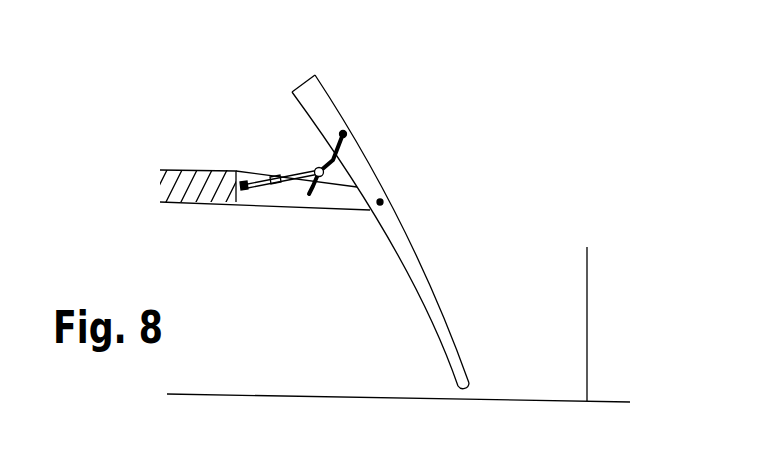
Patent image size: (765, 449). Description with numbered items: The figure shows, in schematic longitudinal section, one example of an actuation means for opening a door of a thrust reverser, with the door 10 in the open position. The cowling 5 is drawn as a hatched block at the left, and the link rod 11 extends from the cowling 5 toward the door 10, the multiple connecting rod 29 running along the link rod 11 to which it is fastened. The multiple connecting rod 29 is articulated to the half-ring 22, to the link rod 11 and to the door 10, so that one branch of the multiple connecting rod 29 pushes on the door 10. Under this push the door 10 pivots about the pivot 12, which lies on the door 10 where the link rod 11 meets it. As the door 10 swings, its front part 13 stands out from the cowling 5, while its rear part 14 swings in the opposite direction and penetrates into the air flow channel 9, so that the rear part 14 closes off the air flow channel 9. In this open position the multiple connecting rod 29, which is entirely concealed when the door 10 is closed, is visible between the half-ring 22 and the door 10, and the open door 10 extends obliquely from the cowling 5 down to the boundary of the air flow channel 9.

The cowling 5 is at (183, 168).
The air flow channel 9 is at (338, 322).
The door 10 is at (326, 113).
The link rod 11 is at (284, 194).
The pivot 12 is at (383, 202).
The front part 13 is at (308, 93).
The rear part 14 is at (467, 375).
The half-ring 22 is at (246, 178).
The multiple connecting rod 29 is at (300, 170).